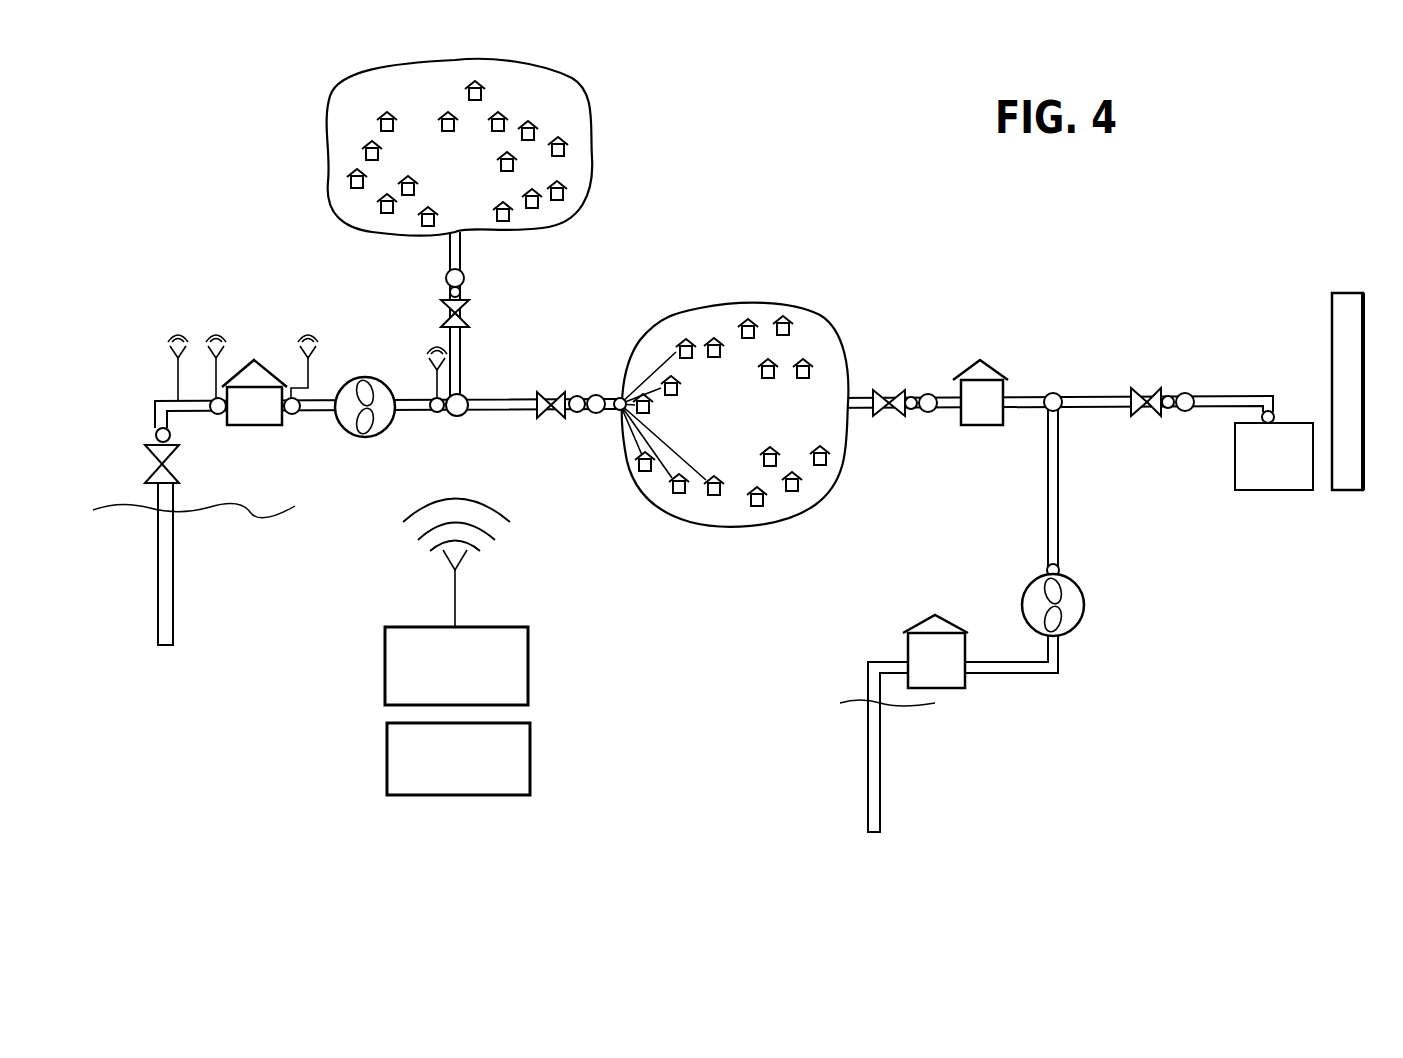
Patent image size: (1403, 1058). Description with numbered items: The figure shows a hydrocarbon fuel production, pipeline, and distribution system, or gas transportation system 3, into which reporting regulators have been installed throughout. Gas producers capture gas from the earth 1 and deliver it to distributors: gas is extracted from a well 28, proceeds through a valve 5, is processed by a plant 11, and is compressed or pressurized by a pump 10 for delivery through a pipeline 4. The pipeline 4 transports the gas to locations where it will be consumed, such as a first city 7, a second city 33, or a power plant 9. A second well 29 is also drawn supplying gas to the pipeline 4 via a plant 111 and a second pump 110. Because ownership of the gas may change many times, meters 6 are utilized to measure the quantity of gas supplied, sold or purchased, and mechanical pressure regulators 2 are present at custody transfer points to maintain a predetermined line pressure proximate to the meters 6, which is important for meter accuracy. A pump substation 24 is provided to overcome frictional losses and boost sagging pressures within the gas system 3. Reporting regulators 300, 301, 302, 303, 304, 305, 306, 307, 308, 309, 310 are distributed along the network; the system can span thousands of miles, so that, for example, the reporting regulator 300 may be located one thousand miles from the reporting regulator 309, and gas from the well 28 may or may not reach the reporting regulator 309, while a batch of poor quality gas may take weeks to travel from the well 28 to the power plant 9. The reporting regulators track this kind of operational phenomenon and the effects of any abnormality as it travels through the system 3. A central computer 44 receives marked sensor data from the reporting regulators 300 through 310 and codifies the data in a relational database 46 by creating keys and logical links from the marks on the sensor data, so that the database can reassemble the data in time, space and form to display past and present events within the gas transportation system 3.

The earth 1 is at (228, 528).
The mechanical pressure regulator 2 is at (472, 313).
The gas transportation system 3 is at (1142, 692).
The pipeline 4 is at (416, 396).
The valve 5 is at (142, 465).
The meter 6 is at (466, 277).
The first city 7 is at (325, 125).
The power plant 9 is at (1222, 479).
The pump 10 is at (355, 380).
The plant 11 is at (262, 373).
The pump substation 24 is at (1000, 372).
The well 28 is at (152, 513).
The second well 29 is at (858, 766).
The second city 33 is at (760, 303).
The central computer 44 is at (530, 660).
The relational database 46 is at (530, 757).
The second pump 110 is at (1085, 610).
The plant 111 is at (920, 632).
The reporting regulator 300 is at (158, 428).
The reporting regulator 301 is at (218, 417).
The reporting regulator 302 is at (292, 417).
The reporting regulator 303 is at (437, 416).
The reporting regulator 304 is at (577, 414).
The reporting regulator 305 is at (618, 414).
The reporting regulator 306 is at (911, 410).
The reporting regulator 307 is at (448, 290).
The reporting regulator 308 is at (1168, 409).
The reporting regulator 309 is at (1275, 413).
The reporting regulator 310 is at (1062, 566).